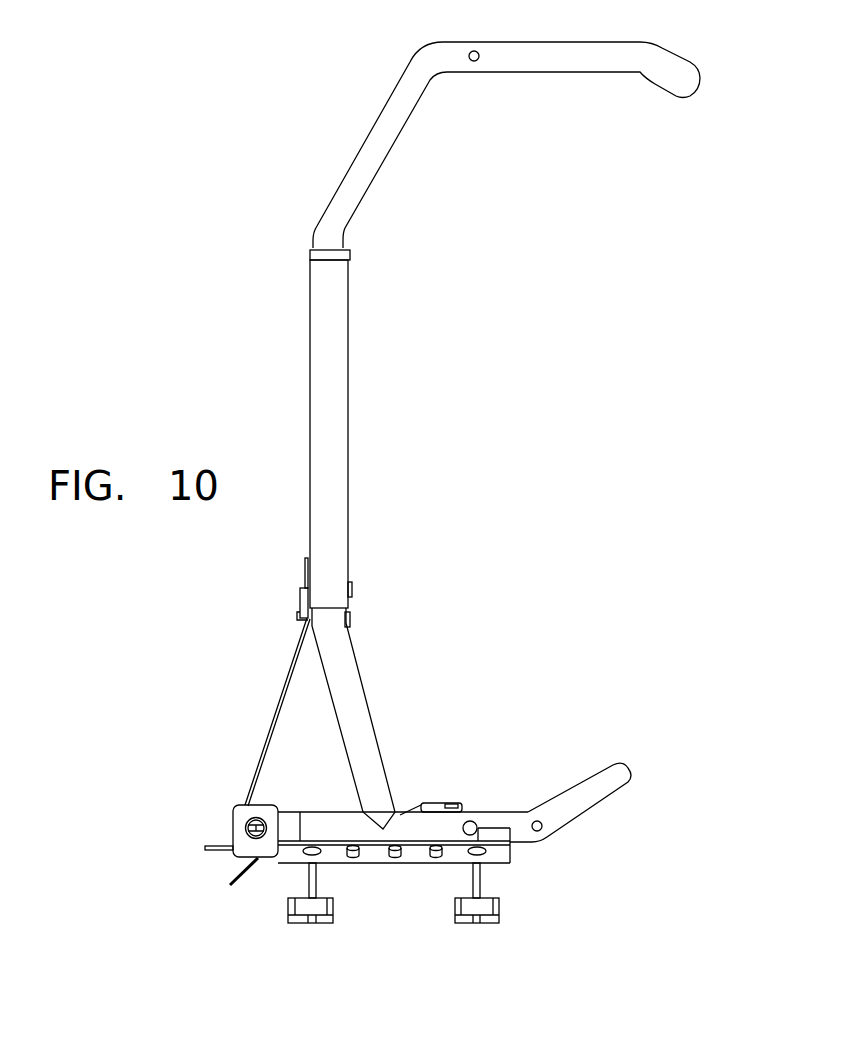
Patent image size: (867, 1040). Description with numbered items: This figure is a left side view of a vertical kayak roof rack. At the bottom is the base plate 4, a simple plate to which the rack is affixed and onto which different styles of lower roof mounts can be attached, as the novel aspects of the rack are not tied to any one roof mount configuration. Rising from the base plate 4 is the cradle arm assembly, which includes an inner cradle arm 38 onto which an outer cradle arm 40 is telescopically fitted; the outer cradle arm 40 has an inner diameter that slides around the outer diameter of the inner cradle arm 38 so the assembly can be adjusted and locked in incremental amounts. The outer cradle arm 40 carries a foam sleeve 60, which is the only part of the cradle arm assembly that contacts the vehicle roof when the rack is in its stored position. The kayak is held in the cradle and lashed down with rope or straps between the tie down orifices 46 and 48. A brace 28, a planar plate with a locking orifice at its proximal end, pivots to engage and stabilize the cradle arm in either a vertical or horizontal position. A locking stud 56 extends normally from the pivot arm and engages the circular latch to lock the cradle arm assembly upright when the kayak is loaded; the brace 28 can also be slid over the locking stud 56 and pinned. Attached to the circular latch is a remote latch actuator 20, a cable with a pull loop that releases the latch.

The base plate 4 is at (372, 855).
The remote latch actuator 20 is at (240, 810).
The brace 28 is at (277, 710).
The inner cradle arm 38 is at (370, 718).
The outer cradle arm 40 is at (392, 158).
The tie down orifice 46 is at (477, 61).
The tie down orifice 48 is at (543, 826).
The locking stud 56 is at (472, 821).
The foam sleeve 60 is at (330, 317).